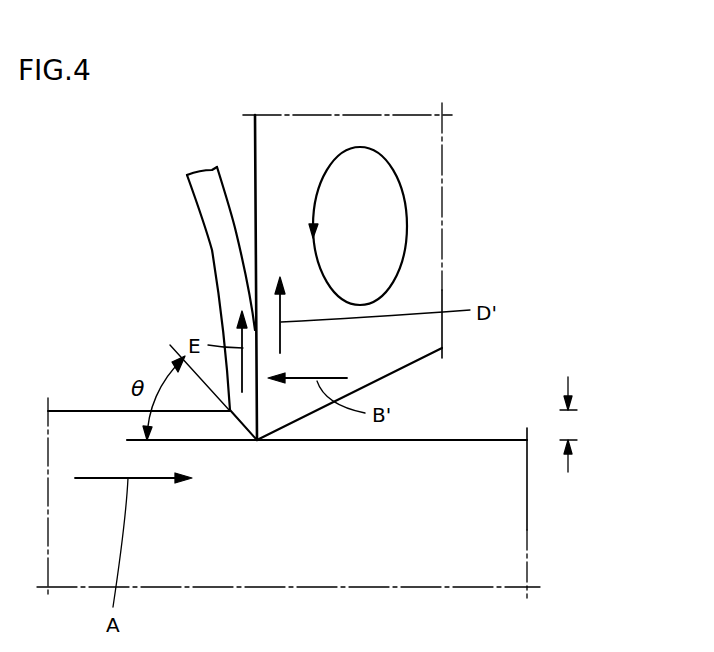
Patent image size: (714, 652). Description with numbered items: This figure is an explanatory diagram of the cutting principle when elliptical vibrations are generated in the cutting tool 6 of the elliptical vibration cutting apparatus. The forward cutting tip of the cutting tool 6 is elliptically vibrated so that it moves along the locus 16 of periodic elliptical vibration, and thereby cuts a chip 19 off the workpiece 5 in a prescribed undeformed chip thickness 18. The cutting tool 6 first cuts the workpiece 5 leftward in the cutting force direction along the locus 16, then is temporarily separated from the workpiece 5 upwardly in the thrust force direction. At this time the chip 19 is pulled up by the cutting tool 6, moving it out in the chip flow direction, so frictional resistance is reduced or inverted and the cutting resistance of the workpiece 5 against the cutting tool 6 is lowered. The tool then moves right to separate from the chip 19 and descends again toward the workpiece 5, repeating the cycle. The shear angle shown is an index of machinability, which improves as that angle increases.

The workpiece 5 is at (510, 512).
The cutting tool 6 is at (423, 150).
The locus of elliptical vibration 16 is at (407, 225).
The undeformed chip thickness 18 is at (568, 423).
The chip 19 is at (225, 245).